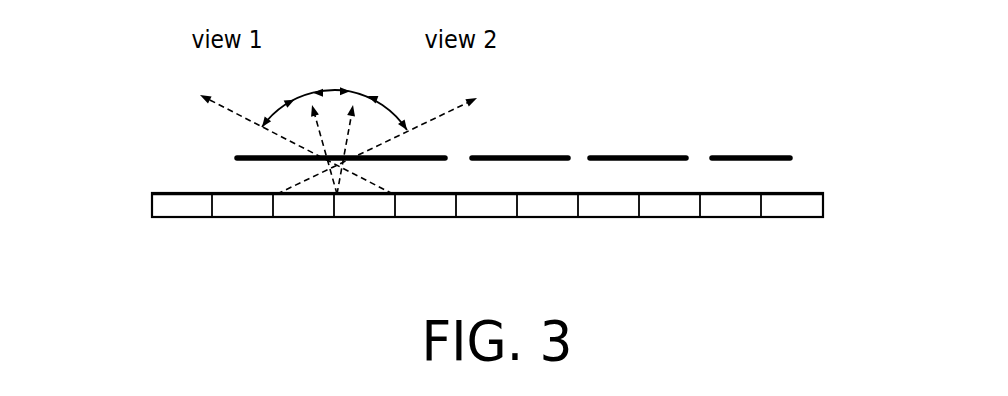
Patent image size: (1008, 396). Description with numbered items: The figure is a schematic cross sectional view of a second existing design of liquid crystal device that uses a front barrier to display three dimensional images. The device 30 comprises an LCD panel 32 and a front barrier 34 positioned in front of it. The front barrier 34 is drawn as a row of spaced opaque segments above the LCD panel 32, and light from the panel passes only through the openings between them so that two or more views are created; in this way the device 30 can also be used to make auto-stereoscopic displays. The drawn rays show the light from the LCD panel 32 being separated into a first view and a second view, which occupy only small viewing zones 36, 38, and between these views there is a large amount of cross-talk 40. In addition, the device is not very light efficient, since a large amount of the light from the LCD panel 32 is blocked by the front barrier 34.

The device 30 is at (110, 172).
The LCD panel 32 is at (823, 203).
The front barrier 34 is at (778, 156).
The viewing zone 36 is at (276, 106).
The viewing zone 38 is at (384, 106).
The cross-talk 40 is at (331, 88).